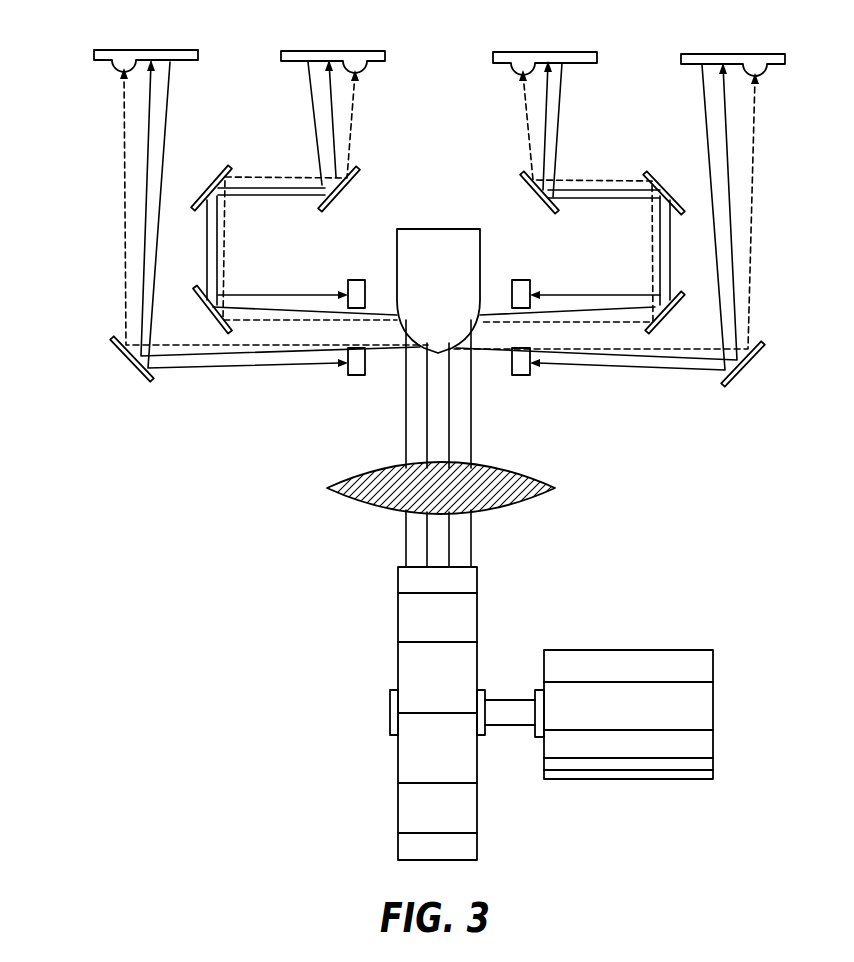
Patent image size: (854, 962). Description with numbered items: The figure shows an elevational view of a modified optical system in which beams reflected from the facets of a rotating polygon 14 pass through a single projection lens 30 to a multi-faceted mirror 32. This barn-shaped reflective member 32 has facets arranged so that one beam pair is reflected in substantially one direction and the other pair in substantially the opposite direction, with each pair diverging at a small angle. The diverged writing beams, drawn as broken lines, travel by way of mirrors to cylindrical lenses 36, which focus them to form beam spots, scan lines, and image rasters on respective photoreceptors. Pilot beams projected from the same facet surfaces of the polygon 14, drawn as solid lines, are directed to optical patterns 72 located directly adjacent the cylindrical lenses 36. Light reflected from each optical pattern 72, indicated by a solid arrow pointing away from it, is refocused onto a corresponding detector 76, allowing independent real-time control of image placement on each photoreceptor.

The polygon 14 is at (398, 630).
The projection lens 30 is at (553, 490).
The multi-faceted mirror 32 is at (437, 229).
The cylindrical lens 36 is at (120, 50).
The optical pattern 72 is at (195, 62).
The detector 76 is at (356, 280).